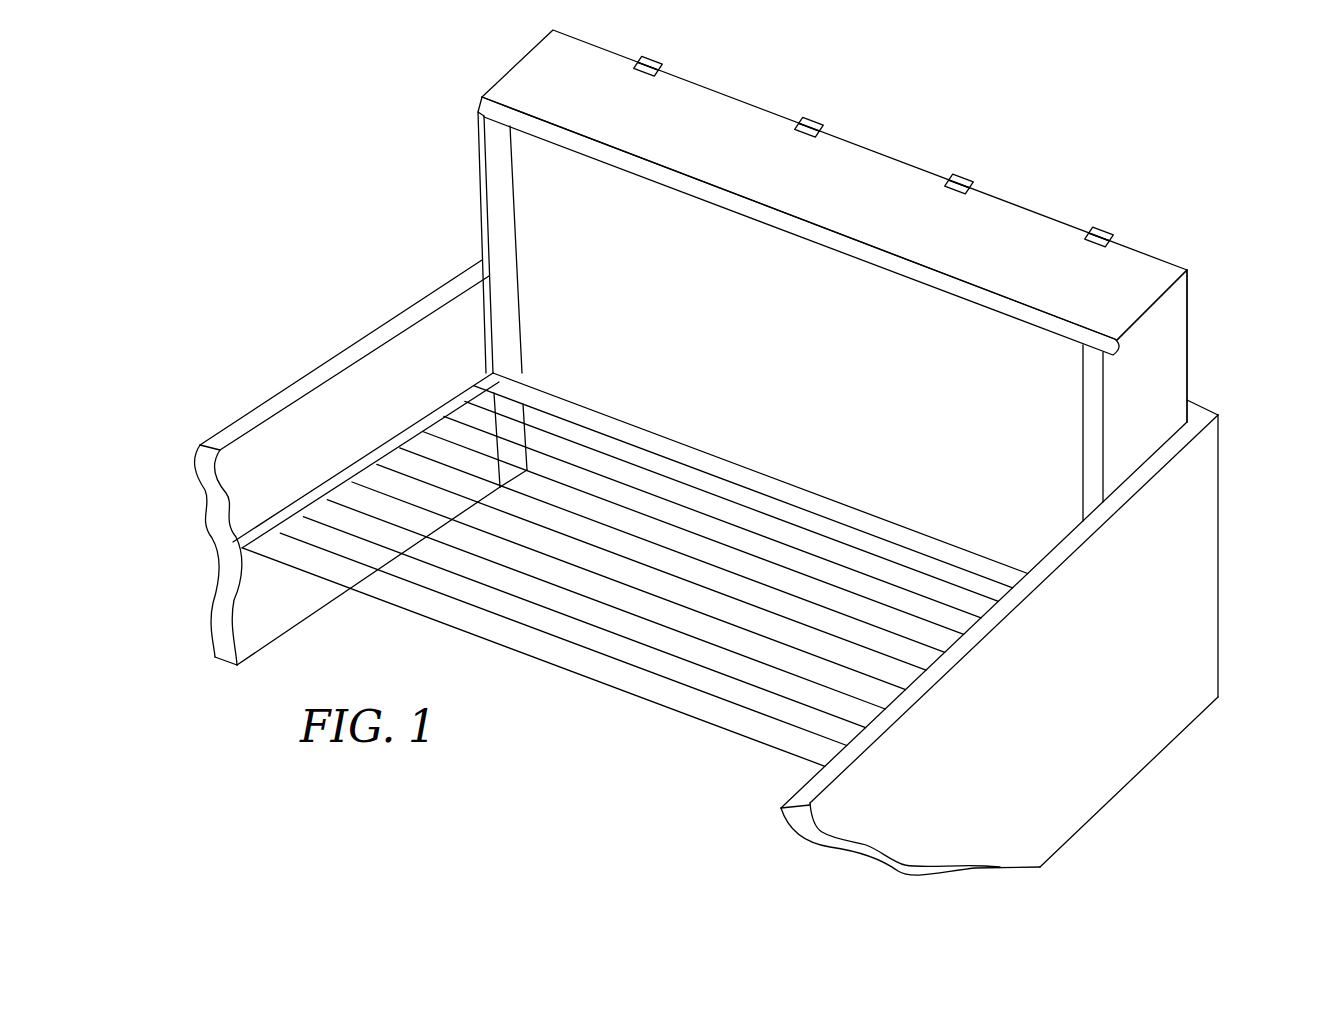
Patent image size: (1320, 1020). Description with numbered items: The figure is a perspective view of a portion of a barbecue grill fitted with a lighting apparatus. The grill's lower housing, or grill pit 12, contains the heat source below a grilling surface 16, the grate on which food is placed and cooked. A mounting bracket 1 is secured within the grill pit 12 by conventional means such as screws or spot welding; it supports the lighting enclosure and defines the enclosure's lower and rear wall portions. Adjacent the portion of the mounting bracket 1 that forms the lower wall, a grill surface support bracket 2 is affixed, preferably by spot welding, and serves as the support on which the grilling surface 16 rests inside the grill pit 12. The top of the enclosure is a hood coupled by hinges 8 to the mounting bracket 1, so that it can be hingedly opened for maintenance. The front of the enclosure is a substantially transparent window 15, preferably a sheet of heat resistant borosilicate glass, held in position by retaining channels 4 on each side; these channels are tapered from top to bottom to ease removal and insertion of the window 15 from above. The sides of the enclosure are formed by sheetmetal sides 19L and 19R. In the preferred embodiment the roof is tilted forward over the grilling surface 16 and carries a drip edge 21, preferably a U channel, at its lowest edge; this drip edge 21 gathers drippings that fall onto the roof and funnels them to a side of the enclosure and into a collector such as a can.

The mounting bracket 1 is at (747, 452).
The grill surface support bracket 2 is at (708, 449).
The retaining channels 4 is at (522, 254).
The hinges 8 is at (810, 119).
The grill pit 12 is at (330, 353).
The window 15 is at (800, 369).
The grilling surface 16 is at (639, 573).
The left side 19L is at (478, 219).
The right side 19R is at (1162, 372).
The drip edge 21 is at (482, 108).